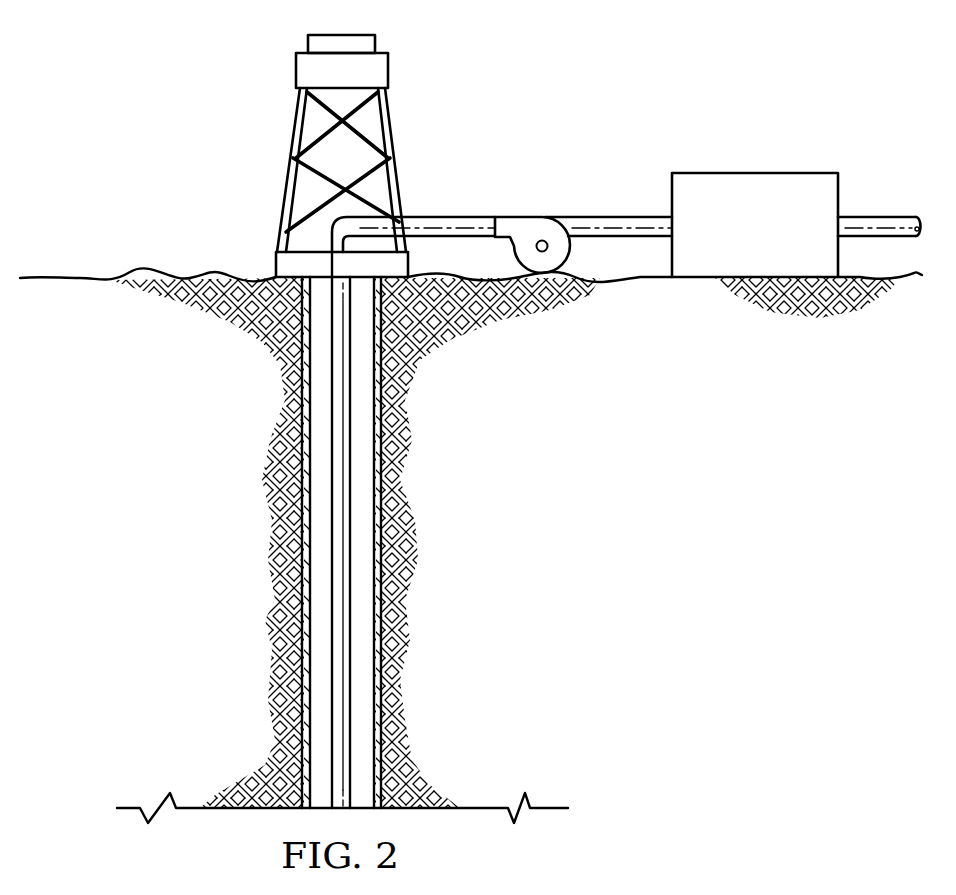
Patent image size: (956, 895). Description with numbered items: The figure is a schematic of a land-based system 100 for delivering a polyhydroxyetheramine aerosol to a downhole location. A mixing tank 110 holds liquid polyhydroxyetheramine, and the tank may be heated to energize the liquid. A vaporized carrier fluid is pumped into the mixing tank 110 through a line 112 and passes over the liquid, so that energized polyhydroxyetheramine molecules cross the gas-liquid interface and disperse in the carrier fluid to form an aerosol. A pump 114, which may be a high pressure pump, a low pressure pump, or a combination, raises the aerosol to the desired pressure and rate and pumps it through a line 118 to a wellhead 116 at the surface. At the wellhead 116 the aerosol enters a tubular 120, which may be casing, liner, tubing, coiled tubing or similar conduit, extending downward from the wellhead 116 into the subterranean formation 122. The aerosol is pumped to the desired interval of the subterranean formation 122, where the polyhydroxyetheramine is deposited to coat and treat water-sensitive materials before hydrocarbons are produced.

The system 100 is at (224, 70).
The mixing tank 110 is at (755, 173).
The line 112 is at (878, 217).
The pump 114 is at (543, 217).
The wellhead 116 is at (275, 265).
The line 118 is at (448, 217).
The tubular 120 is at (332, 672).
The subterranean formation 122 is at (245, 535).